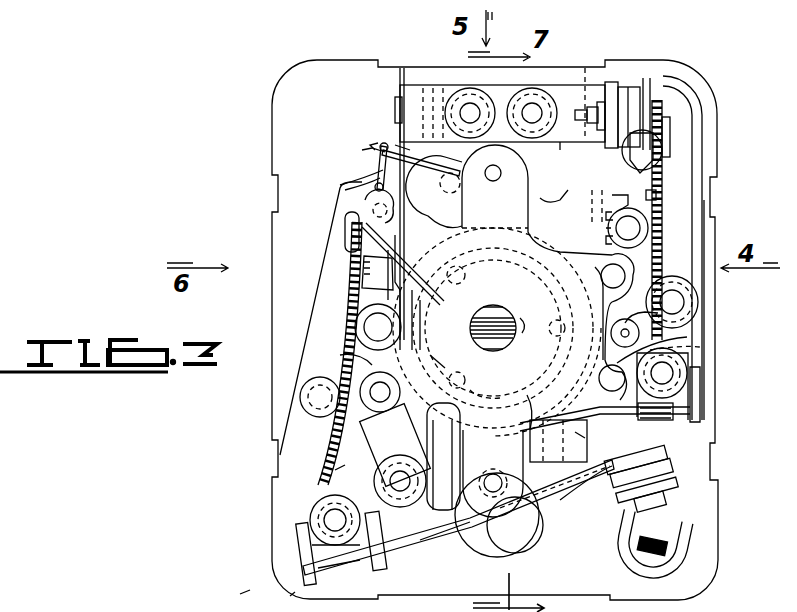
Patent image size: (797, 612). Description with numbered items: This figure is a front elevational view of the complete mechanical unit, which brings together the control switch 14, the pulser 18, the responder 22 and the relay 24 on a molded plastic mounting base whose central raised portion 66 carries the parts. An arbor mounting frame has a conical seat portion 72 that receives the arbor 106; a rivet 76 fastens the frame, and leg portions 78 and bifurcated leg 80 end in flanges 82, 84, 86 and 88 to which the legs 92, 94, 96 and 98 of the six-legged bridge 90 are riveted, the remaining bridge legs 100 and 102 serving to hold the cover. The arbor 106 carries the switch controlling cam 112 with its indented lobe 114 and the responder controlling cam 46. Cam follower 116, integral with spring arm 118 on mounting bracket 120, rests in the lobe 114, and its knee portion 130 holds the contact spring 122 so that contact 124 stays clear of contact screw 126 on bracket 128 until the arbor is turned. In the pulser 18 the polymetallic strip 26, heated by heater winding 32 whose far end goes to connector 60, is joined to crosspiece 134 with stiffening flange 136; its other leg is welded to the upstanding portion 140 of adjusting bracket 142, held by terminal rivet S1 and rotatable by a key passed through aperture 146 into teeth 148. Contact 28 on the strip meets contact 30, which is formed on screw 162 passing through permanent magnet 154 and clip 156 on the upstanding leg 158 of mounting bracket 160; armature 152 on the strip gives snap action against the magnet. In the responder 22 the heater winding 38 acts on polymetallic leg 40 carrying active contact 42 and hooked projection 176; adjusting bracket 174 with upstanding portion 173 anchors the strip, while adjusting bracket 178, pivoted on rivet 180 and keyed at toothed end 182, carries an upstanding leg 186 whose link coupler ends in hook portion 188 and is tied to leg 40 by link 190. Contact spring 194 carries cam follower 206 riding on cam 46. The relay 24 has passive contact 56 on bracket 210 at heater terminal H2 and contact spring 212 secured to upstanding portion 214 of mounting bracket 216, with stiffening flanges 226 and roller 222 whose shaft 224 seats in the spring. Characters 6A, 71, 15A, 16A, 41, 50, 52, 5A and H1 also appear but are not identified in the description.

The frame 6A is at (310, 70).
The pulser 18 is at (672, 176).
The mounting bracket 160 is at (563, 95).
The spool 71 is at (533, 108).
The upstanding leg 186 is at (417, 92).
The screw 162 is at (562, 122).
The upstanding leg 158 is at (615, 82).
The block 15A is at (630, 86).
The contact 30 is at (650, 80).
The contact 28 is at (656, 95).
The upstanding portion 140 is at (648, 108).
The armature 152 is at (683, 100).
The aperture 146 is at (673, 128).
The adjusting bracket 142 is at (680, 135).
The teeth 148 is at (672, 152).
The toothed end 182 is at (656, 197).
The adjusting bracket 178 is at (621, 198).
The central raised portion 66 is at (545, 205).
The upstanding flange 136 is at (686, 358).
The pin 16A is at (568, 143).
The bridge leg 100 is at (494, 150).
The rivet 180 is at (468, 195).
The crosspiece 134 is at (455, 158).
The link 190 is at (383, 160).
The hook portion 188 is at (375, 148).
The hooked projection 176 is at (372, 165).
The upstanding portion 173 is at (383, 170).
The contact spring 194 is at (403, 147).
The bridge leg 92 is at (405, 190).
The flange 82 is at (400, 205).
The six-legged bridge 90 is at (537, 278).
The leg portion 76 is at (427, 218).
The switch controlling cam 112 is at (443, 303).
The lobe 114 is at (543, 380).
The cam follower 206 is at (470, 312).
The arbor 106 is at (522, 332).
The leg portion 78 is at (433, 358).
The cam follower 116 is at (492, 387).
The knee portion 130 is at (527, 427).
The bridge leg 96 is at (652, 247).
The flange 86 is at (640, 265).
The polymetallic strip 26 is at (660, 227).
The heater winding 32 is at (662, 240).
The terminal rivet S1 is at (674, 303).
The connector 60 is at (630, 330).
The bridge leg 98 is at (664, 345).
The flange 88 is at (650, 350).
The shaft 41 is at (668, 379).
The mounting bracket 120 is at (700, 418).
The spring arm 118 is at (579, 436).
The leg portion 80 is at (622, 427).
The control switch 14 is at (577, 437).
The contact spring 122 is at (558, 441).
The bar 50 is at (548, 474).
The upstanding portion 214 is at (378, 566).
The contact spring 212 is at (425, 545).
The stiffening flanges 226 is at (588, 483).
The roller 222 is at (500, 547).
The shaft 224 is at (517, 543).
The relay mechanism 24 is at (566, 512).
The bar 5A is at (672, 460).
The passive contact 56 is at (673, 482).
The bracket 210 is at (683, 527).
The heater terminal H2 is at (677, 560).
The adjusting bracket 174 is at (333, 218).
The electrical contact 124 is at (325, 492).
The contact screw 126 is at (332, 445).
The mounting bracket 128 is at (330, 470).
The responder controlling cam 46 is at (362, 266).
The polymetallic leg 40 is at (370, 337).
The shaft 52 is at (368, 328).
The responder 22 is at (325, 345).
The heater winding 38 is at (352, 362).
The bridge leg 94 is at (377, 388).
The conical seat portion 72 is at (310, 395).
The flange 84 is at (446, 440).
The bridge leg 102 is at (412, 510).
The magnet H1 is at (382, 505).
The active contact 42 is at (303, 525).
The mounting bracket 216 is at (300, 556).
The clip 156 is at (231, 601).
The permanent magnet 154 is at (282, 602).